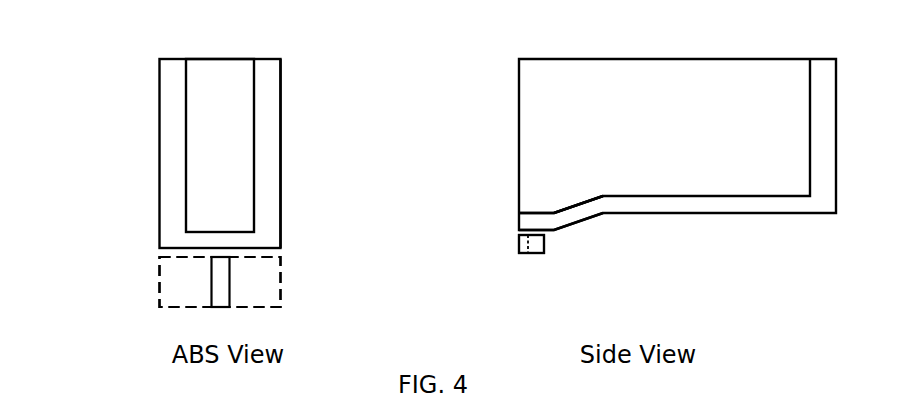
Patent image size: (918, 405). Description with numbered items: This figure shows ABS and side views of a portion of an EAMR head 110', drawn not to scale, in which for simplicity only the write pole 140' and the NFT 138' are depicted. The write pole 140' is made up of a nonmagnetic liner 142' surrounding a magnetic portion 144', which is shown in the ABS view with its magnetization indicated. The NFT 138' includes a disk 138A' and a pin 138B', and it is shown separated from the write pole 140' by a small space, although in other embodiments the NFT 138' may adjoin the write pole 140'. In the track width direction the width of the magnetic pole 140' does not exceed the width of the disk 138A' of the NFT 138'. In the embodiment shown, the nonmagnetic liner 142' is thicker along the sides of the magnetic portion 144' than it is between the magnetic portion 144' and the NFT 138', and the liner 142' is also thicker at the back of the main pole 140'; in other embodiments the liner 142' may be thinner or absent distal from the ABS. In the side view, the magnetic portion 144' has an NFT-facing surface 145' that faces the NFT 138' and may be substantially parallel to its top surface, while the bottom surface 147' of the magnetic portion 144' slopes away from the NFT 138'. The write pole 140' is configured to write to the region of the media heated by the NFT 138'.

The EAMR head 110' is at (434, 44).
The write pole 140' is at (452, 153).
The magnetic portion 144' is at (498, 145).
The NFT-facing surface 145' is at (159, 167).
The nonmagnetic liner 142' is at (441, 168).
The NFT 138' is at (363, 277).
The disk 138A' is at (386, 275).
The pin 138B' is at (370, 287).
The bottom surface 147' is at (524, 190).